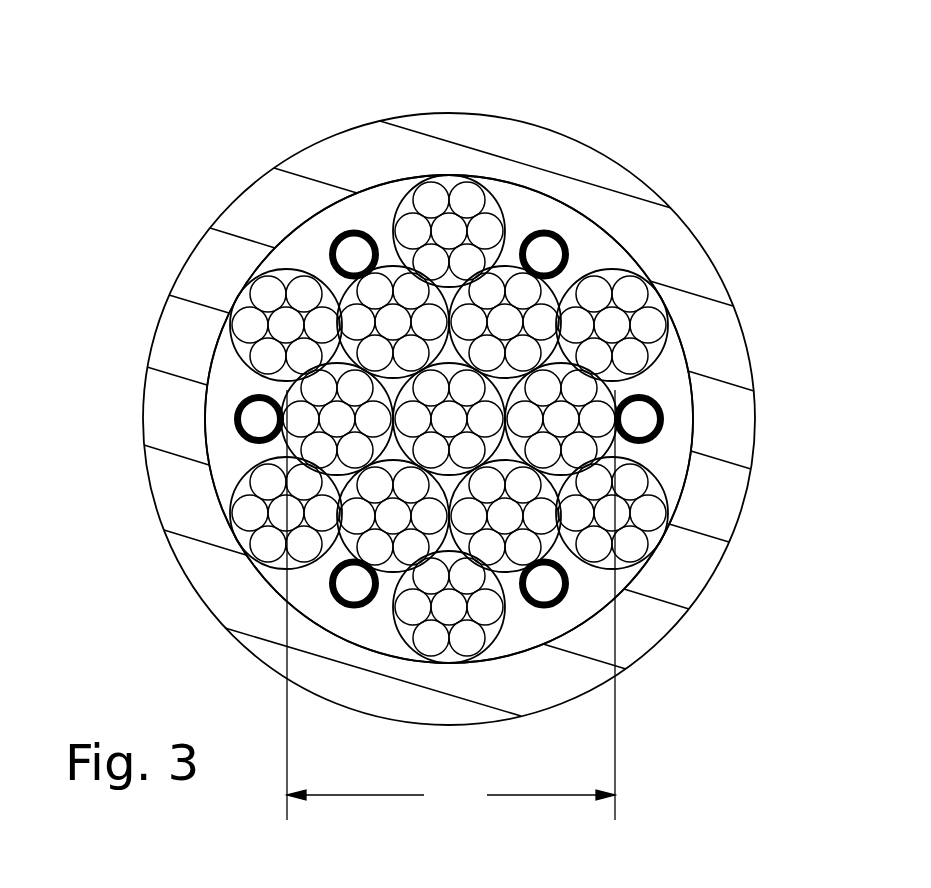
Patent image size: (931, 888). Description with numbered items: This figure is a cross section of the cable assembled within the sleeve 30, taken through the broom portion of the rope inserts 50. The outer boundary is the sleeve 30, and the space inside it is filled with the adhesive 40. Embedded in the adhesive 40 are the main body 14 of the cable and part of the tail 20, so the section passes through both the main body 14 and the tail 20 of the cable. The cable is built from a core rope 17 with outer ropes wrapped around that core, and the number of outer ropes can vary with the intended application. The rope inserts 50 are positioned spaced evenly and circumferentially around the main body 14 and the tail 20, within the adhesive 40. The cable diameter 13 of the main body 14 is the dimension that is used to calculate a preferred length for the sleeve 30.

The cable diameter 13 is at (451, 609).
The main body 14 is at (270, 250).
The core rope 17 is at (457, 393).
The tail 20 is at (502, 228).
The sleeve 30 is at (168, 288).
The adhesive 40 is at (372, 205).
The rope insert 50 is at (568, 247).